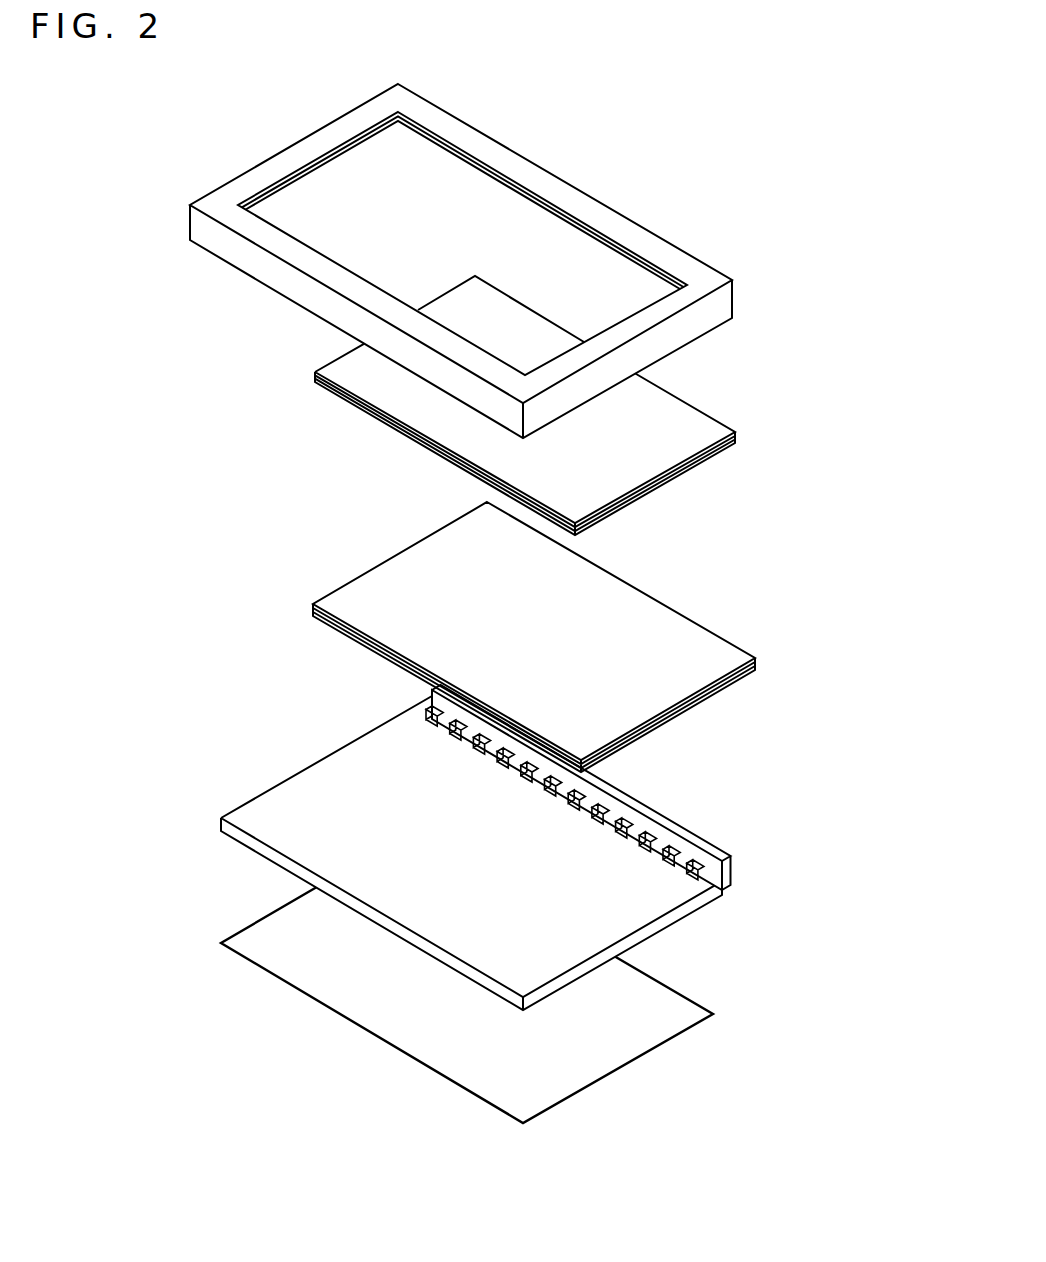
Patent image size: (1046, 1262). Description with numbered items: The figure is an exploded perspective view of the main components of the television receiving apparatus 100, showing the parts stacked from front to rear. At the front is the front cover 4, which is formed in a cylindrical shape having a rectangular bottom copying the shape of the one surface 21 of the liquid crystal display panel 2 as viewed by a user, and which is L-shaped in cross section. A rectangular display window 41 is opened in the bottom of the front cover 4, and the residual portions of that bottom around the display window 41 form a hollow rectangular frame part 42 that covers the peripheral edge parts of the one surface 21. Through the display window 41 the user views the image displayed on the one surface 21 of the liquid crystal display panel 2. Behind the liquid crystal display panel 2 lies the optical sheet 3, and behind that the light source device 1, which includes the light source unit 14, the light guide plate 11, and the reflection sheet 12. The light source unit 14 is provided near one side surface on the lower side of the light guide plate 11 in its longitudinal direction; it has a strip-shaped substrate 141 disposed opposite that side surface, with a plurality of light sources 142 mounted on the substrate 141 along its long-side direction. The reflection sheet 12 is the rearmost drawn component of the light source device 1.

The television receiving apparatus 100 is at (768, 120).
The front cover 4 is at (190, 226).
The display window 41 is at (517, 180).
The frame part 42 is at (459, 132).
The liquid crystal display panel 2 is at (317, 353).
The one surface 21 is at (682, 412).
The optical sheet 3 is at (340, 567).
The light source device 1 is at (830, 743).
The light source unit 14 is at (673, 757).
The substrate 141 is at (715, 853).
The light sources 142 is at (667, 840).
The light guide plate 11 is at (689, 908).
The reflection sheet 12 is at (680, 1021).